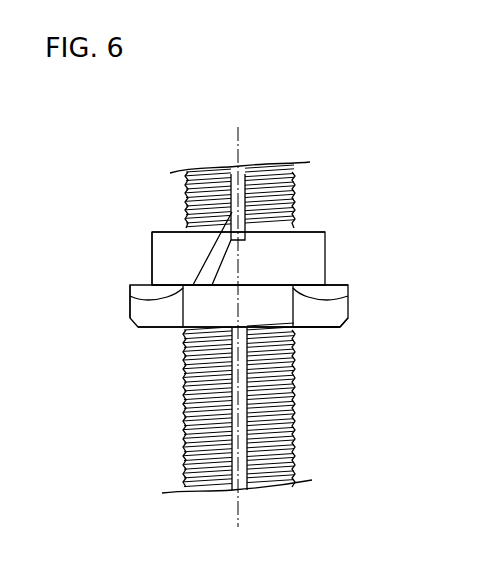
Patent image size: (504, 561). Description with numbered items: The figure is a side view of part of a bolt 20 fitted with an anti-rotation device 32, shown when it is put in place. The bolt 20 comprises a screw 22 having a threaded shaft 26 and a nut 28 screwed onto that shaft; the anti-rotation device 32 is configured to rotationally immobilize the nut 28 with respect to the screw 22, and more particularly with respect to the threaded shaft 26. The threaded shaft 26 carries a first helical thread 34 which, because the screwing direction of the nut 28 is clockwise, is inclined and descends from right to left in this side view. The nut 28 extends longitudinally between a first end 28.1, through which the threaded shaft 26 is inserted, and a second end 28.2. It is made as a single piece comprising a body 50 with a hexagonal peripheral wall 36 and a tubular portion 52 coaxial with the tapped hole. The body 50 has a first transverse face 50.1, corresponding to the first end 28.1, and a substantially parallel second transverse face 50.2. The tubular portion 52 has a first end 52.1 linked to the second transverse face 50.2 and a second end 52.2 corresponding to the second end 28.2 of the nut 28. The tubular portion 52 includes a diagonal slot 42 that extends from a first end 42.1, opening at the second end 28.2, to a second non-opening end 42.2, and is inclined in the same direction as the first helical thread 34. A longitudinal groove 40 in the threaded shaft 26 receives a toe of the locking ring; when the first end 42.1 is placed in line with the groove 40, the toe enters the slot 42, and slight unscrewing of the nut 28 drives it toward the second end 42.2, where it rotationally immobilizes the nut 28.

The bolt 20 is at (338, 165).
The screw 22 is at (185, 192).
The threaded shaft 26 is at (296, 455).
The nut 28 is at (362, 302).
The first end 28.1 is at (155, 328).
The second end 28.2 is at (160, 232).
The anti-rotation device 32 is at (298, 205).
The first helical thread 34 is at (298, 190).
The hexagonal peripheral wall 36 is at (323, 308).
The longitudinal groove 40 is at (241, 176).
The diagonal slot 42 is at (203, 262).
The first end 42.1 is at (212, 172).
The second non-opening end 42.2 is at (205, 277).
The body 50 is at (338, 315).
The first transverse face 50.1 is at (323, 320).
The second transverse face 50.2 is at (333, 285).
The tubular portion 52 is at (290, 237).
The first end 52.1 is at (346, 288).
The second end 52.2 is at (326, 233).